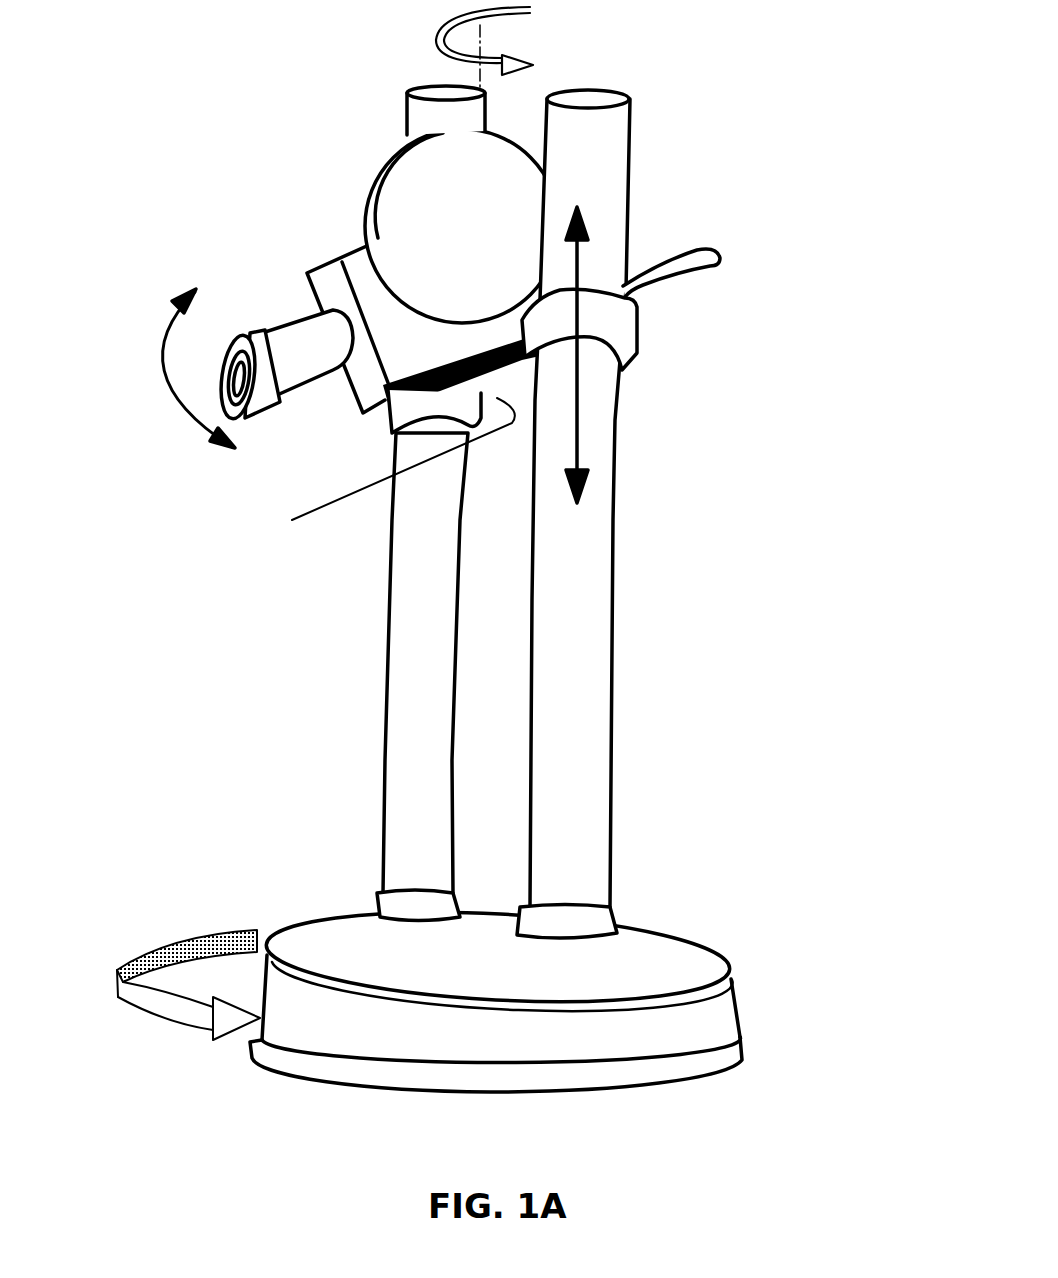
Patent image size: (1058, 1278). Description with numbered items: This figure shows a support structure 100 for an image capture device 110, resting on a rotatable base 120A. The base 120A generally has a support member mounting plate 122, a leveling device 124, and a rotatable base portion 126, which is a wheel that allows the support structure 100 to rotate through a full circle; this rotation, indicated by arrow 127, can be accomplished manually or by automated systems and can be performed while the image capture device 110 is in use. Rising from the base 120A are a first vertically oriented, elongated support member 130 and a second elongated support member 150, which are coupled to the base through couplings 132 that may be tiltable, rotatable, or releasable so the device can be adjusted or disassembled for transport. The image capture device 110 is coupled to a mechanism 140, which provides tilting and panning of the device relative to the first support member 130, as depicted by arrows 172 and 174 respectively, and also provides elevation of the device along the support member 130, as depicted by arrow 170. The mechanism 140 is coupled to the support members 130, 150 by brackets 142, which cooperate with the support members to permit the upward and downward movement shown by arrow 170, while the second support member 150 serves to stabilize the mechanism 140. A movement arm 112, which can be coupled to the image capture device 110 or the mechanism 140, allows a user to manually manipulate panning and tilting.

The support structure 100 is at (503, 549).
The image capture device 110 is at (307, 273).
The movement arm 112 is at (723, 261).
The rotatable base 120A is at (569, 925).
The support member mounting plate 122 is at (663, 947).
The leveling device 124 is at (687, 1020).
The rotatable base portion 126 is at (697, 1063).
The arrow 127 is at (150, 953).
The first elongated support member 130 is at (603, 570).
The couplings 132 is at (610, 912).
The mechanism 140 is at (378, 471).
The brackets 142 is at (627, 337).
The second elongated support member 150 is at (403, 630).
The arrow 170 is at (580, 417).
The arrow 172 is at (167, 340).
The arrow 174 is at (535, 64).